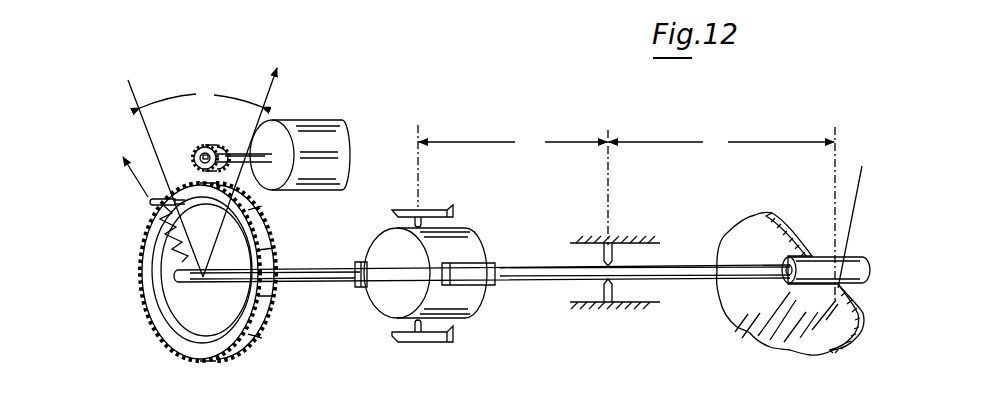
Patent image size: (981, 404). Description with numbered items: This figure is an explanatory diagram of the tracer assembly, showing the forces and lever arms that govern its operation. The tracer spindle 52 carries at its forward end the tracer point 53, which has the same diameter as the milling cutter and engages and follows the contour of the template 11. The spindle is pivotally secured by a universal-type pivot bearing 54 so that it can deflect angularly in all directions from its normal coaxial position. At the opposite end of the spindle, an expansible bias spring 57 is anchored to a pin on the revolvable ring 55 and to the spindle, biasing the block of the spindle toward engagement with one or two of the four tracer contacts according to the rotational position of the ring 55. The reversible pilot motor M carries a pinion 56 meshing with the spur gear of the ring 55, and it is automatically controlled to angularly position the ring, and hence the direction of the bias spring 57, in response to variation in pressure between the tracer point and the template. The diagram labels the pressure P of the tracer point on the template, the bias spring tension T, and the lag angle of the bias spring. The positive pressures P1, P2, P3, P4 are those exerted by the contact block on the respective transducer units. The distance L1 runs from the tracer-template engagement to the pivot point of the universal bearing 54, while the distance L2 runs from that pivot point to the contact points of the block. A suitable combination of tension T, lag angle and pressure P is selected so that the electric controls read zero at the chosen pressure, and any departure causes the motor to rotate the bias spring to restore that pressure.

The template 11 is at (745, 243).
The tracer spindle 52 is at (520, 265).
The tracer point 53 is at (815, 256).
The universal-type pivot bearing 54 is at (582, 306).
The ring 55 is at (143, 275).
The pinion 56 is at (190, 145).
The bias spring 57 is at (168, 236).
The pilot motor M is at (314, 128).
The pressure of tracer point on template P is at (206, 158).
The bias spring tension T is at (129, 165).
The positive pressure on transducer unit P1 is at (434, 212).
The positive pressure on transducer unit P2 is at (486, 282).
The positive pressure on transducer unit P3 is at (434, 342).
The positive pressure on transducer unit P4 is at (356, 264).
The distance from tracer-template engagement to pivot point L1 is at (722, 213).
The distance from pivot point to contact points of block L2 is at (513, 185).